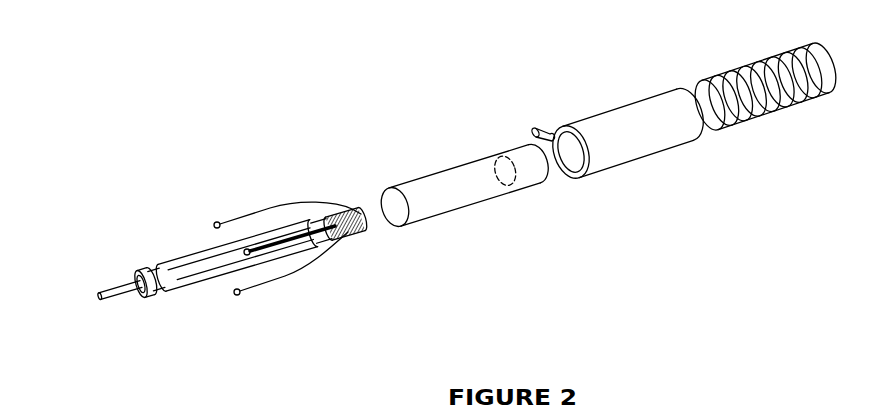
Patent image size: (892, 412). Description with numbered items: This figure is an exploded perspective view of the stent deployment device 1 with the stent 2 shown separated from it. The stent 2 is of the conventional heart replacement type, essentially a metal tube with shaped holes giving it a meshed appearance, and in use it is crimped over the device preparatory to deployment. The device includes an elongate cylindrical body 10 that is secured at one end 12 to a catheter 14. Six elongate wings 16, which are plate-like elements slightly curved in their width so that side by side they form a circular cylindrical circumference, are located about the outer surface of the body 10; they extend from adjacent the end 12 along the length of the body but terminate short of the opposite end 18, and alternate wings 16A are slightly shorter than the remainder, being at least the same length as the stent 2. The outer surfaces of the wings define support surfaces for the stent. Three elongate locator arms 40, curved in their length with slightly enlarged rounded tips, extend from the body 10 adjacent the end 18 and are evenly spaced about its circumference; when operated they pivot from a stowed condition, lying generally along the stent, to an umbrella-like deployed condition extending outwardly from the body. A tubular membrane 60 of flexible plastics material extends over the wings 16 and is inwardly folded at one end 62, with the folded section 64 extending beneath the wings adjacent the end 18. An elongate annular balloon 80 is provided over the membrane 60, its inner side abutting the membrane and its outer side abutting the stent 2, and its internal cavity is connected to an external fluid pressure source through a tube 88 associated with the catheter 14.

The stent deployment device 1 is at (354, 94).
The stent 2 is at (768, 63).
The elongate body 10 is at (147, 293).
The end of the body 12 is at (131, 275).
The catheter 14 is at (108, 299).
The elongate wings 16 is at (183, 263).
The alternate wings 16A is at (193, 277).
The opposite end of the body 18 is at (353, 207).
The locator arms 40 is at (268, 208).
The tubular membrane 60 is at (446, 182).
The folded end of the membrane 62 is at (545, 181).
The folded section 64 is at (516, 190).
The elongate annular balloon 80 is at (654, 144).
The tube 88 is at (548, 127).